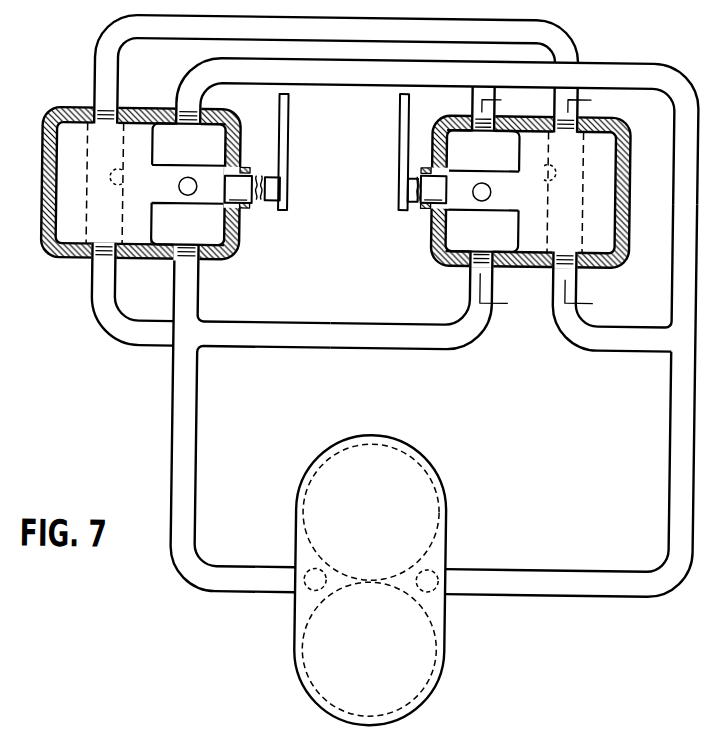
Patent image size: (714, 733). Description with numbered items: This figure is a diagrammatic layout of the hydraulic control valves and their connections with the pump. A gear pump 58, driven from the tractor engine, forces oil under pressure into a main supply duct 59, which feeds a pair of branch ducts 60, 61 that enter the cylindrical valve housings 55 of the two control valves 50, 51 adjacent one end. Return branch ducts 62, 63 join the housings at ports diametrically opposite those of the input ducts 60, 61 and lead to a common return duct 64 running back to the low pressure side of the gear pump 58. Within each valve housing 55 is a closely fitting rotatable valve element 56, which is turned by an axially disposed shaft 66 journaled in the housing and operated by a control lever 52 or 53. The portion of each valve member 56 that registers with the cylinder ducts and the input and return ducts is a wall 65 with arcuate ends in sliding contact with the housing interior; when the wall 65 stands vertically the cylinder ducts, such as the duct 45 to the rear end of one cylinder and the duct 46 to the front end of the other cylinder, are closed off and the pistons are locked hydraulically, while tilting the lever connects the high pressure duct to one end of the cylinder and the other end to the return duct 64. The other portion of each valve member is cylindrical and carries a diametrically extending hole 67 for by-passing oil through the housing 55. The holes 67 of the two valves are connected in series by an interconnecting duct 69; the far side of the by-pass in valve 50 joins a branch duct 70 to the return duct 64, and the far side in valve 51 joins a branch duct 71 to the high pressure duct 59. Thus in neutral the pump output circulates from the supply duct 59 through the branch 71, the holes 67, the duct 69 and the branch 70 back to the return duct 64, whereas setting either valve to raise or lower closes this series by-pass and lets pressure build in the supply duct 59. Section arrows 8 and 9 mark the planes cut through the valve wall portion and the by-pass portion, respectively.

The section line 8- 8 is at (504, 204).
The section line 9- 9 is at (590, 204).
The duct 45 is at (471, 201).
The duct 46 is at (198, 192).
The control valve 50 is at (430, 262).
The control valve 51 is at (46, 107).
The control lever 52 is at (397, 105).
The control lever 53 is at (284, 119).
The valve housing 55 is at (54, 262).
The rotatable valve element 56 is at (156, 240).
The gear pump 58 is at (449, 506).
The main supply duct 59 is at (192, 487).
The branch duct 60 is at (472, 286).
The branch duct 61 is at (198, 288).
The branch duct 62 is at (468, 98).
The branch duct 63 is at (173, 102).
The return duct 64 is at (676, 458).
The valve wall 65 is at (203, 179).
The shaft 66 is at (337, 188).
The by-pass hole 67 is at (122, 183).
The interconnecting duct 69 is at (91, 58).
The branch duct 70 is at (582, 340).
The branch duct 71 is at (91, 286).